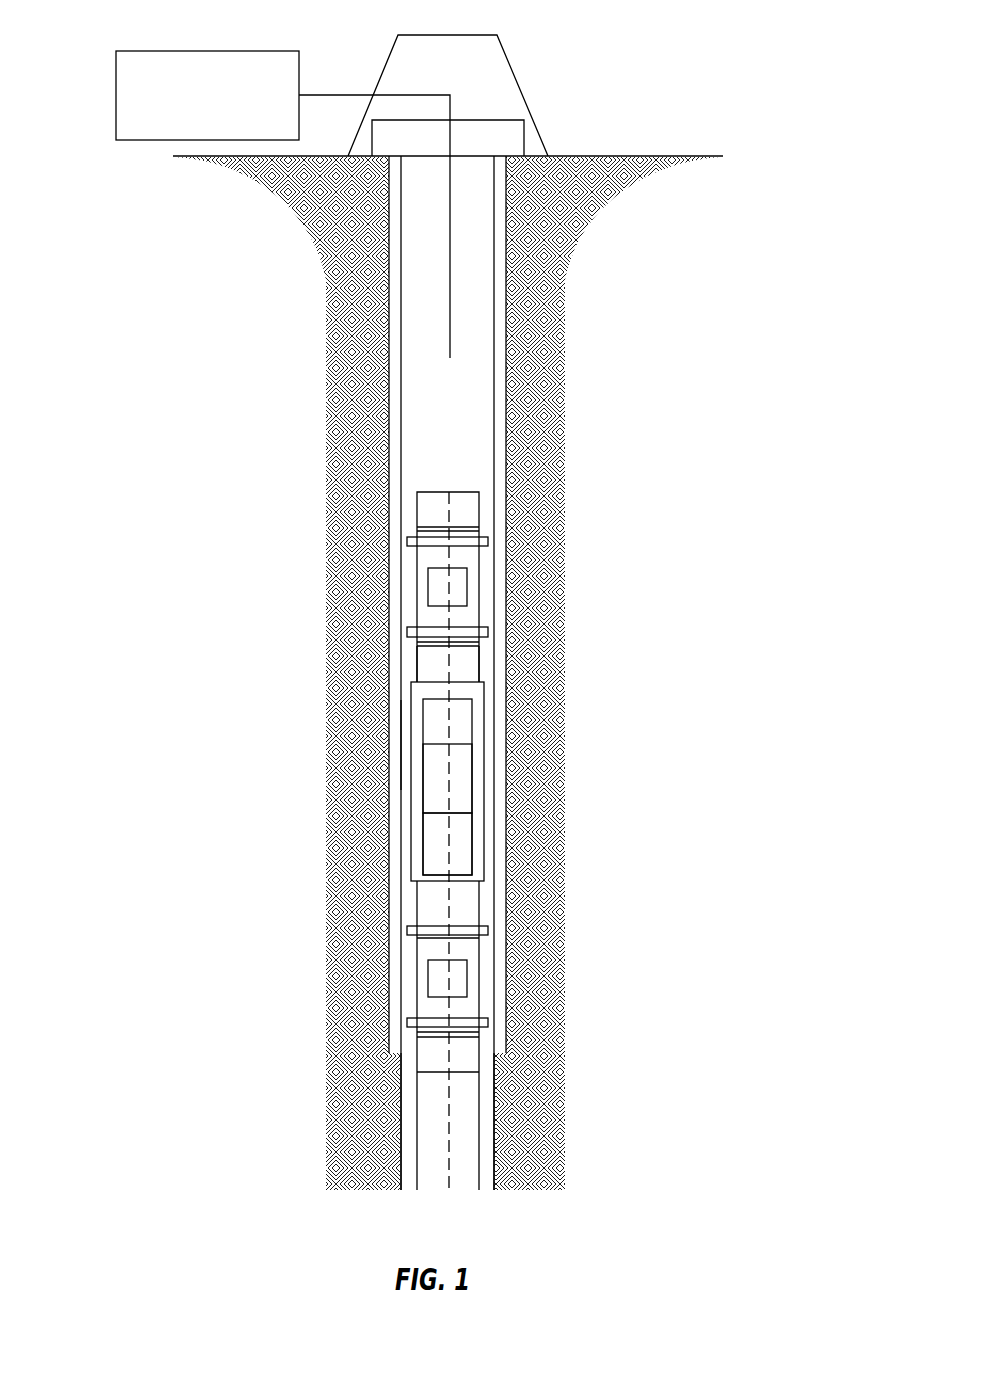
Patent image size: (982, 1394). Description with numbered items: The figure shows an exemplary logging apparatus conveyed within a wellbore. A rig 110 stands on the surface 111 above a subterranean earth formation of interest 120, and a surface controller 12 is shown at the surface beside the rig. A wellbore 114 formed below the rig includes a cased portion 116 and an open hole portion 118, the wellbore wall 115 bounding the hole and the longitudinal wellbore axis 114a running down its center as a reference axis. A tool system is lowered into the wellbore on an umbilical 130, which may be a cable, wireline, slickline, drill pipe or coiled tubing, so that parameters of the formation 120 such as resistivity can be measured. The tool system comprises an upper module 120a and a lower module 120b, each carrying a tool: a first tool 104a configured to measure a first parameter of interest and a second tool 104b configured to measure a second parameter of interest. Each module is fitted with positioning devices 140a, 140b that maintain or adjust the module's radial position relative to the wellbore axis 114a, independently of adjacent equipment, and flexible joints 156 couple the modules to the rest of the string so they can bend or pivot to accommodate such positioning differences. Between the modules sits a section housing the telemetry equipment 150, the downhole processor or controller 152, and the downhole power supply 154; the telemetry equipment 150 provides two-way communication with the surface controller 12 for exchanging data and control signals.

The surface controller 12 is at (150, 51).
The rig 110 is at (521, 49).
The surface 111 is at (650, 156).
The wellbore 114 is at (397, 710).
The longitudinal axis of the wellbore 114a is at (437, 1134).
The wellbore wall 115 is at (402, 773).
The cased portion 116 is at (507, 292).
The open hole portion 118 is at (497, 1105).
The subterranean earth formation of interest 120 is at (90, 731).
The upper downhole tool 120a is at (486, 595).
The lower downhole tool 120b is at (486, 995).
The umbilical 130 is at (450, 358).
The positioning device 140a is at (407, 540).
The positioning device 140b is at (407, 930).
The first tool 104a is at (435, 586).
The second tool 104b is at (435, 978).
The telemetry equipment 150 is at (465, 723).
The downhole processor or controller 152 is at (465, 776).
The downhole power supply 154 is at (465, 853).
The flexible joint 156 is at (473, 663).